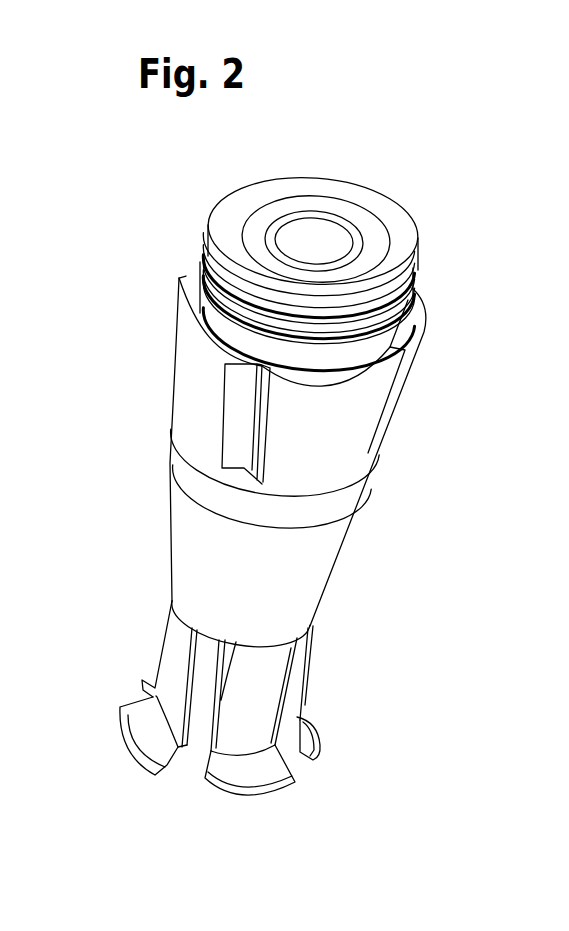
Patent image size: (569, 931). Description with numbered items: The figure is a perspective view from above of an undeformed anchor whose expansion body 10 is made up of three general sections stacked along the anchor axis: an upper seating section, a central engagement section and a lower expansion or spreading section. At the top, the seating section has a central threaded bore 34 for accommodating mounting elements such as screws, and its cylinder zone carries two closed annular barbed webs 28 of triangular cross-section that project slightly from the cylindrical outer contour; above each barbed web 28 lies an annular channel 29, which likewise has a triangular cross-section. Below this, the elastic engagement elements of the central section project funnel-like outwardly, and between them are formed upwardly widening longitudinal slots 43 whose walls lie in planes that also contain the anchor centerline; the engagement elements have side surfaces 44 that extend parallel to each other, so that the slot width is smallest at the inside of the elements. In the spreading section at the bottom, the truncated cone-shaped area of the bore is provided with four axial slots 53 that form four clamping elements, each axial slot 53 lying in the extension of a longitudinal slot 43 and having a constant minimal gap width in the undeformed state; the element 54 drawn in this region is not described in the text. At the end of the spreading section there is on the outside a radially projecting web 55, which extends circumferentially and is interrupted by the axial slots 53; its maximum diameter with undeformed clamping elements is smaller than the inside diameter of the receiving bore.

The expansion body 10 is at (383, 503).
The barbed web 28 is at (413, 282).
The annular channel 29 is at (333, 325).
The central threaded bore 34 is at (357, 236).
The longitudinal slot 43 is at (400, 397).
The side surface 44 is at (253, 462).
The axial slot 53 is at (297, 668).
The fingers 54 is at (292, 700).
The radially projecting web 55 is at (315, 740).